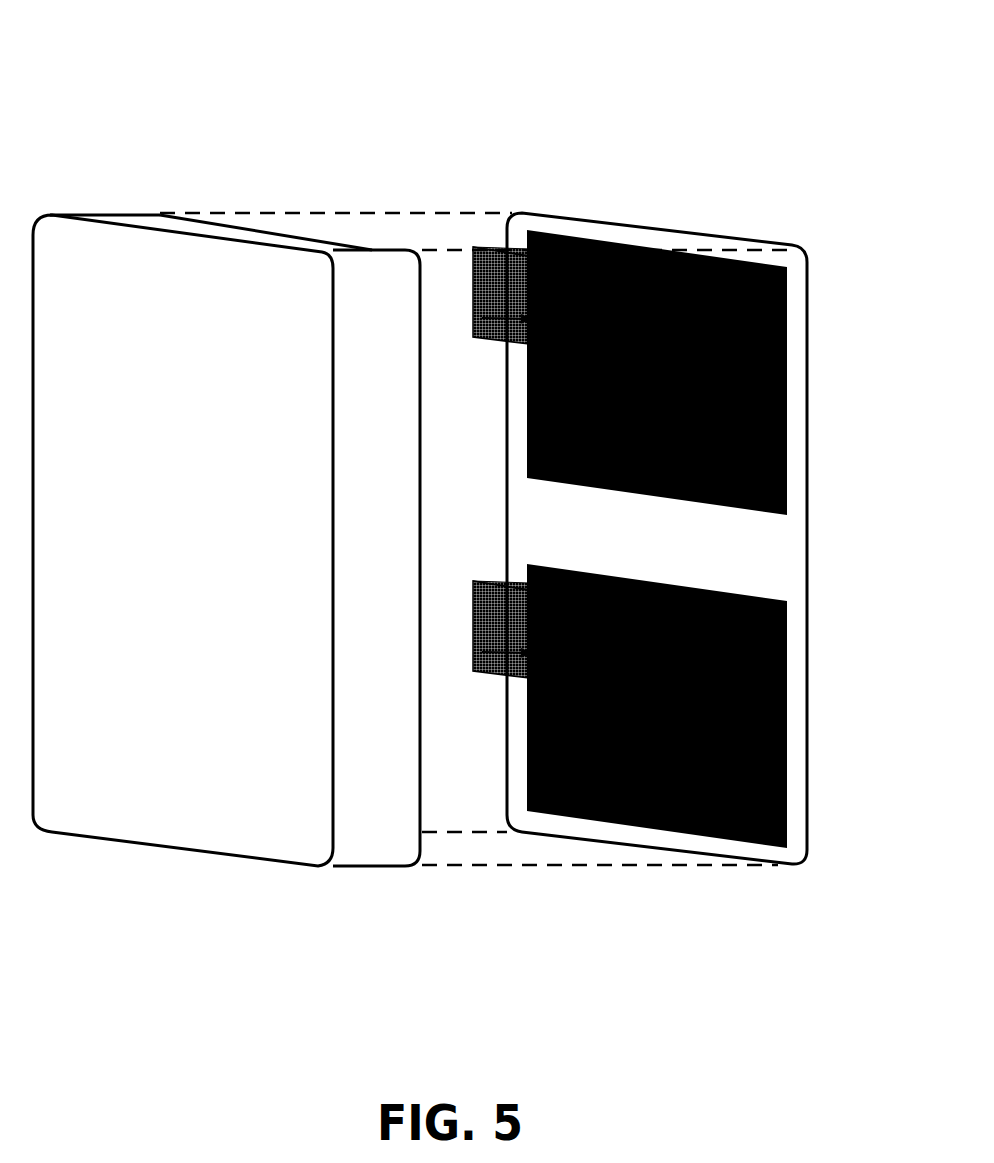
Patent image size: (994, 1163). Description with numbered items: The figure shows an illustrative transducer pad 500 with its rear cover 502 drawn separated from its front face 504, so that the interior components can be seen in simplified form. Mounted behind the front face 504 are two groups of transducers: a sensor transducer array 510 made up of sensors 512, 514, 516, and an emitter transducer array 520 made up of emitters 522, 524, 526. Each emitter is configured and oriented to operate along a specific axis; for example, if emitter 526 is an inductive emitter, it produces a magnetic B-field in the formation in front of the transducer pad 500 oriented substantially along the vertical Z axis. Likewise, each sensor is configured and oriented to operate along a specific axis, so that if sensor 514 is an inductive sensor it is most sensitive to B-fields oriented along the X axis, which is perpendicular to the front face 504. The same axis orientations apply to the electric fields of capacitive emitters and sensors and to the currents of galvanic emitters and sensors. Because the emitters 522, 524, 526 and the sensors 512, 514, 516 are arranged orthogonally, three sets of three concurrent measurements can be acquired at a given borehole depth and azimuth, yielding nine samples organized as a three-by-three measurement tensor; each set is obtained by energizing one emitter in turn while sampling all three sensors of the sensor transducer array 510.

The transducer pad 500 is at (472, 440).
The rear cover 502 is at (168, 553).
The front face 504 is at (632, 557).
The sensor transducer array 510 is at (828, 267).
The sensor 512 is at (551, 318).
The sensor 514 is at (623, 328).
The sensor 516 is at (547, 440).
The emitter transducer array 520 is at (692, 706).
The emitter 522 is at (542, 630).
The emitter 524 is at (688, 649).
The emitter 526 is at (613, 764).